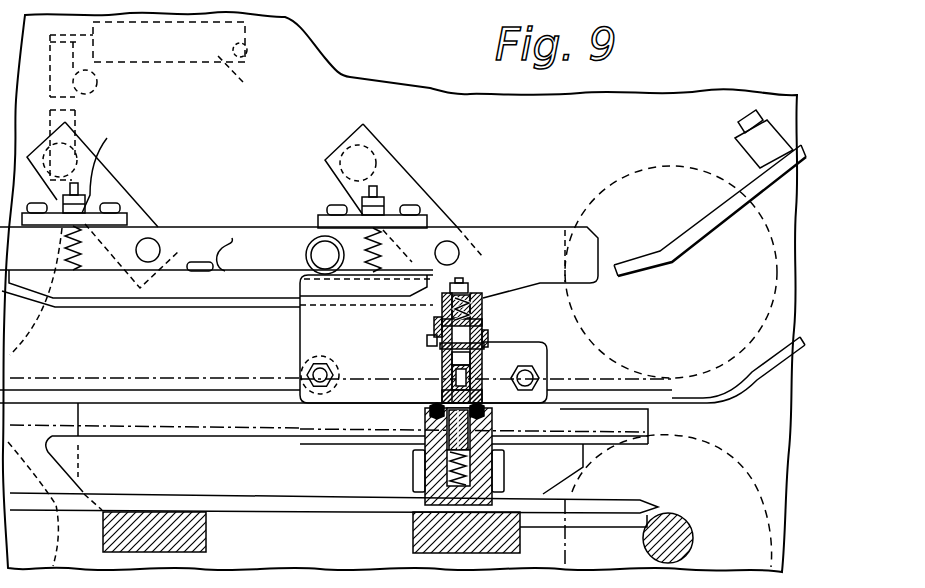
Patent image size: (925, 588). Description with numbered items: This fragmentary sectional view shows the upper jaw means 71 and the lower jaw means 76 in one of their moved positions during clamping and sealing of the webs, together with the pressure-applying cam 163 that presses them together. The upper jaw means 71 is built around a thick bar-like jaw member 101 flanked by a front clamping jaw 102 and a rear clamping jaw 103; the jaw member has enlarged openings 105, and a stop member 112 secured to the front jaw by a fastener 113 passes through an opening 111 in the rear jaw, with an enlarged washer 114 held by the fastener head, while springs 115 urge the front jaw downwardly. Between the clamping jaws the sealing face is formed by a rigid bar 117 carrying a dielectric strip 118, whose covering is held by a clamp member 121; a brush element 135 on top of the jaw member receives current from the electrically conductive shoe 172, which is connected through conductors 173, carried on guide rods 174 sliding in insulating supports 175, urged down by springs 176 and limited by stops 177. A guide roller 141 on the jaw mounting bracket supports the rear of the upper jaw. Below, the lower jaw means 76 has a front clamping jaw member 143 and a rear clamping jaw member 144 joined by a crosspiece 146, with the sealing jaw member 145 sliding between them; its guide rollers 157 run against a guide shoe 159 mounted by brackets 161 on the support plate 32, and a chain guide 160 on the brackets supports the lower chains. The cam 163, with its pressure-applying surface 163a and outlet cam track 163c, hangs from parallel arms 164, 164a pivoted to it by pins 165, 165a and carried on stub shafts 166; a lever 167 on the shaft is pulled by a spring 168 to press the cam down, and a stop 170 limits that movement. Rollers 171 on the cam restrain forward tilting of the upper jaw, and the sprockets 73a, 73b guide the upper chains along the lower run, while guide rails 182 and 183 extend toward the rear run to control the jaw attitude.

The support plate 32 is at (325, 549).
The upper jaw means 71 is at (517, 285).
The sprocket 73a is at (36, 328).
The sprocket 73b is at (650, 187).
The lower jaw means 76 is at (404, 463).
The jaw member 101 is at (472, 289).
The front clamping jaw 102 is at (483, 313).
The rear clamping jaw 103 is at (442, 302).
The enlarged openings 105 is at (481, 333).
The openings 111 is at (442, 360).
The stop member 112 is at (488, 352).
The fastener 113 is at (437, 343).
The enlarged washer 114 is at (442, 365).
The springs 115 is at (481, 294).
The rigid bar 117 is at (446, 388).
The strip of dielectric material 118 is at (490, 402).
The clamp member 121 is at (484, 372).
The brush element 135 is at (463, 282).
The guide roller 141 is at (324, 356).
The front clamping jaw member 143 is at (490, 443).
The rear clamping jaw member 144 is at (430, 421).
The sealing jaw member 145 is at (466, 430).
The crosspiece 146 is at (447, 503).
The guide rollers 157 is at (500, 466).
The guide shoe 159 is at (228, 494).
The chain guide 160 is at (145, 440).
The brackets 161 is at (206, 532).
The pressure-applying cam 163 is at (252, 233).
The pressure-applying surface 163a is at (263, 306).
The outlet cam track 163c is at (566, 287).
The arm 164 is at (110, 193).
The arm 164a is at (403, 178).
The pin 165 is at (150, 248).
The pin 165a is at (445, 246).
The stub shaft 166 is at (77, 133).
The lever 167 is at (76, 97).
The spring 168 is at (252, 74).
The stop 170 is at (92, 73).
The rollers 171 is at (309, 234).
The electrically conductive shoe 172 is at (252, 282).
The conductors 173 is at (209, 254).
The guide rods 174 is at (63, 234).
The insulating supports 175 is at (128, 213).
The springs 176 is at (82, 262).
The stops 177 is at (112, 171).
The guide rail 182 is at (703, 227).
The guide rail 183 is at (762, 370).